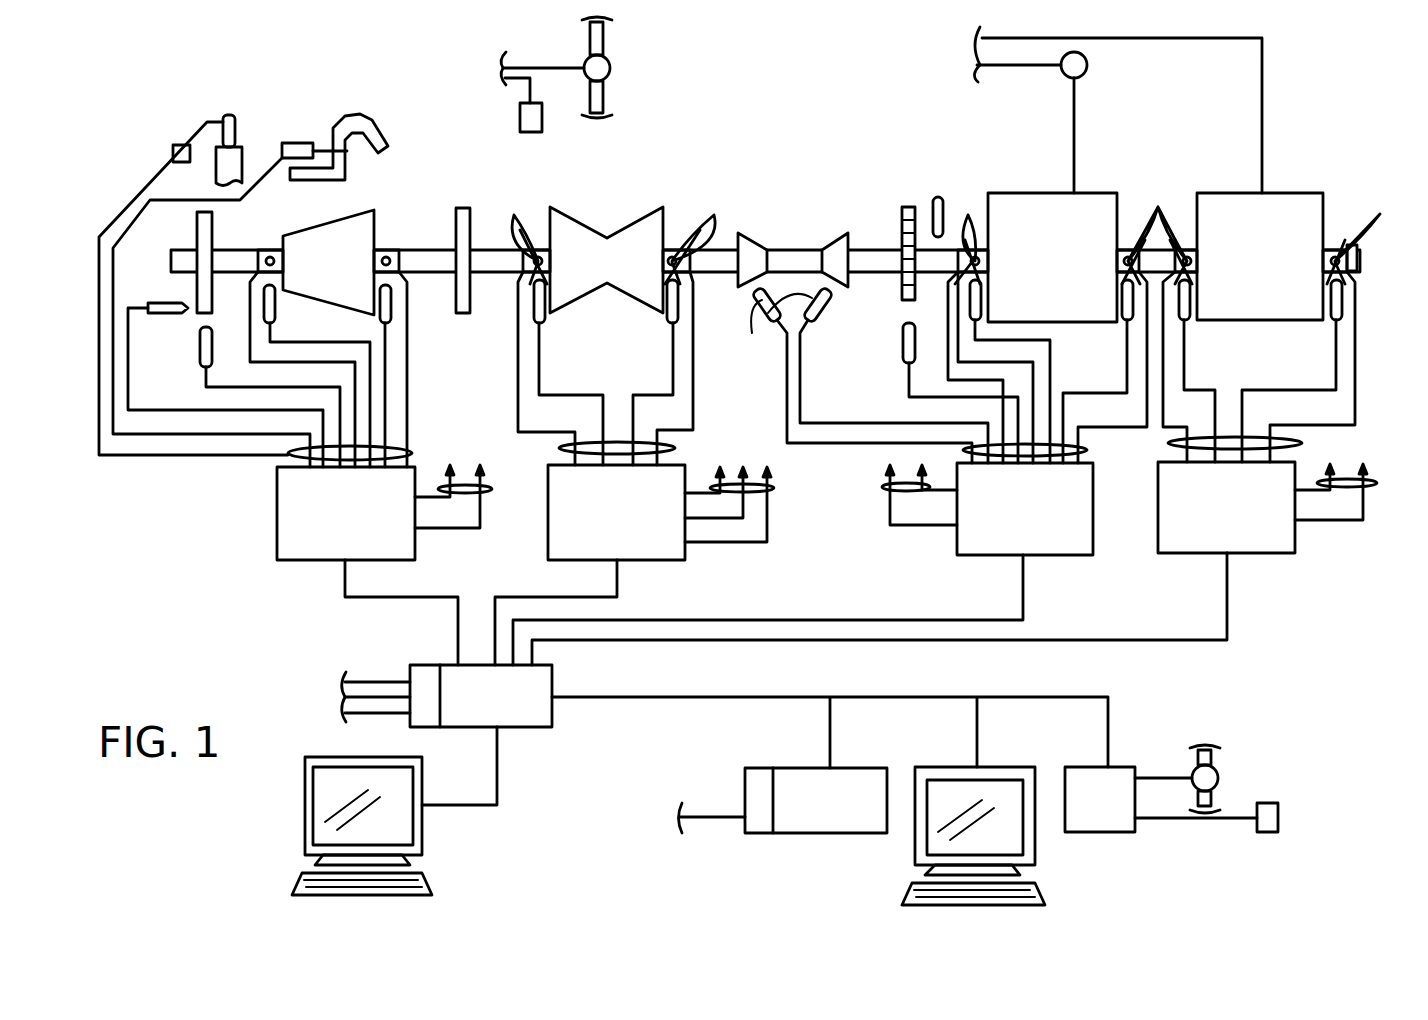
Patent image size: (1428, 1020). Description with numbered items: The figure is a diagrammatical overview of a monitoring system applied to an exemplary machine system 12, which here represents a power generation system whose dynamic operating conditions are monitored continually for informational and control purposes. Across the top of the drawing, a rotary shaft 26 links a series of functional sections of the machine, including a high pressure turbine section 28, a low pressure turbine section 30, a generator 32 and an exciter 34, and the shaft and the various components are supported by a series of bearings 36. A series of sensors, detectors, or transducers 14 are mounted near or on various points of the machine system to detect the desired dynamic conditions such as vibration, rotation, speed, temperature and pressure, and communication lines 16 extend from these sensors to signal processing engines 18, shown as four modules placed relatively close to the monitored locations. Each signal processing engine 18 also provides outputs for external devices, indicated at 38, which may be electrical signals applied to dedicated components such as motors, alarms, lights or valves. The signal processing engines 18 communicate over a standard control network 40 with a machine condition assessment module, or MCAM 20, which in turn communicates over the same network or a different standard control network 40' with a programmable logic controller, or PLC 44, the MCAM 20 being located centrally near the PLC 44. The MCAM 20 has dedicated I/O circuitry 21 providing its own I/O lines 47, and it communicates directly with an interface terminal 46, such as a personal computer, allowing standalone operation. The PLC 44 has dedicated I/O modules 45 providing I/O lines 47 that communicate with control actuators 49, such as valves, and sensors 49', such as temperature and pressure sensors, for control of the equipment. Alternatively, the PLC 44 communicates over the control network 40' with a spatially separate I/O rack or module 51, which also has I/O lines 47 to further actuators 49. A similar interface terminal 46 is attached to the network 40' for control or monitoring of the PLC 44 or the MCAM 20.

The machine system 12 is at (1192, 156).
The sensors, detectors, or transducers 14 is at (175, 152).
The communication lines 16 is at (412, 453).
The signal processing engines 18 is at (296, 560).
The machine condition assessment module (MCAM) 20 is at (526, 728).
The dedicated I/O circuitry 21 is at (428, 664).
The rotary shaft 26 is at (796, 248).
The high pressure turbine section 28 is at (326, 222).
The low pressure turbine section 30 is at (582, 220).
The generator 32 is at (1052, 192).
The exciter 34 is at (1293, 192).
The bearings 36 is at (268, 256).
The outputs for external devices 38 is at (492, 489).
The standard control network 40 is at (786, 609).
The different standard control network 40' is at (830, 732).
The programmable logic controller (PLC) 44 is at (828, 833).
The dedicated I/O modules 45 is at (760, 833).
The interface terminals 46 is at (305, 806).
The I/O lines 47 is at (380, 697).
The control actuators 49 is at (957, 429).
The sensors 49' is at (492, 122).
The spatially separate I/O rack or module 51 is at (1100, 832).